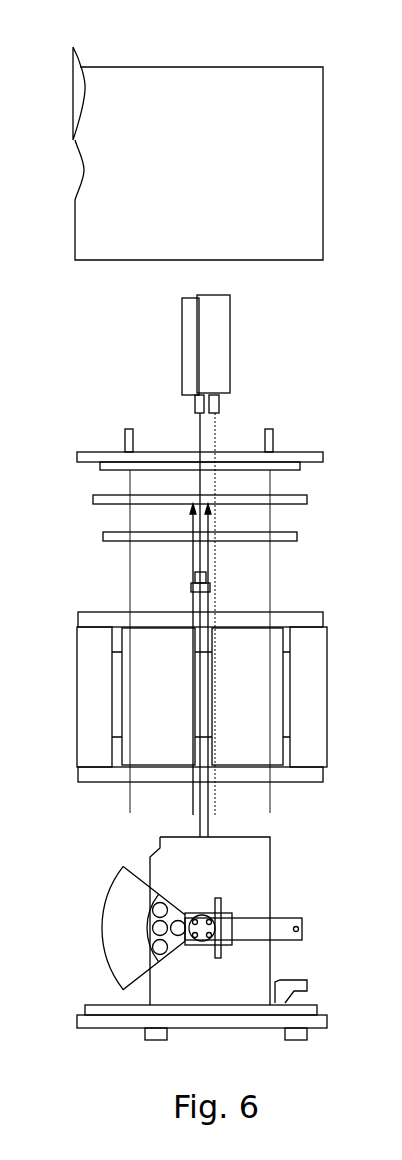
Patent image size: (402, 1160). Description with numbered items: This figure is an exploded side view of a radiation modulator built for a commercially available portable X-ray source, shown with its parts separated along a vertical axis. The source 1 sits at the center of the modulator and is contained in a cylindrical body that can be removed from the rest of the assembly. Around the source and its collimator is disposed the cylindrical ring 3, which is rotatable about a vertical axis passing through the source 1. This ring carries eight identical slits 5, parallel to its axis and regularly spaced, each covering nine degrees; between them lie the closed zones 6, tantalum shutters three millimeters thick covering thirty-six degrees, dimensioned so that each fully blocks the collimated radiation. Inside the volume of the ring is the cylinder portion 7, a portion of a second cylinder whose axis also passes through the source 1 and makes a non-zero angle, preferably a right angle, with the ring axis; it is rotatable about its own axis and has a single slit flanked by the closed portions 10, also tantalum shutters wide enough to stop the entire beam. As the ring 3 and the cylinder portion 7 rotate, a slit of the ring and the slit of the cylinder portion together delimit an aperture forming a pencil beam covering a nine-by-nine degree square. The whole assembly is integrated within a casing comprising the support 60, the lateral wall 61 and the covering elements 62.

The source 1 is at (257, 890).
The cylindrical ring 3 is at (82, 745).
The slits 5 is at (115, 687).
The closed zones 6 is at (160, 637).
The portion of a second cylinder 7 is at (113, 911).
The closed portions 10 is at (113, 880).
The support 60 is at (253, 1030).
The lateral wall 61 is at (197, 66).
The covering elements 62 is at (93, 480).